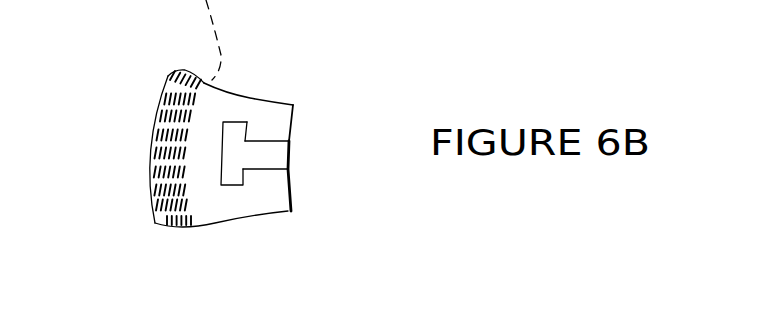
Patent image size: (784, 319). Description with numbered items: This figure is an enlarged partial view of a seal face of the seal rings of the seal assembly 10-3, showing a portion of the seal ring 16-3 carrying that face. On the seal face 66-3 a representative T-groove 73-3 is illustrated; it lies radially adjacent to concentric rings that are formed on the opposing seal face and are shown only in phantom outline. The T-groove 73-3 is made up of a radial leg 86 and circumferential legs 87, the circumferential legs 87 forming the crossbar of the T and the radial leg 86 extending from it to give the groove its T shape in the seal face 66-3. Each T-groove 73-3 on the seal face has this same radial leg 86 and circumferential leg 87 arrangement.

The connector assembly 10-3 is at (117, 81).
The body 16-3 is at (240, 108).
The seal face 66-3 is at (273, 113).
The T-groove 73-3 is at (276, 145).
The radial leg 86 is at (265, 162).
The circumferential legs 87 is at (223, 122).